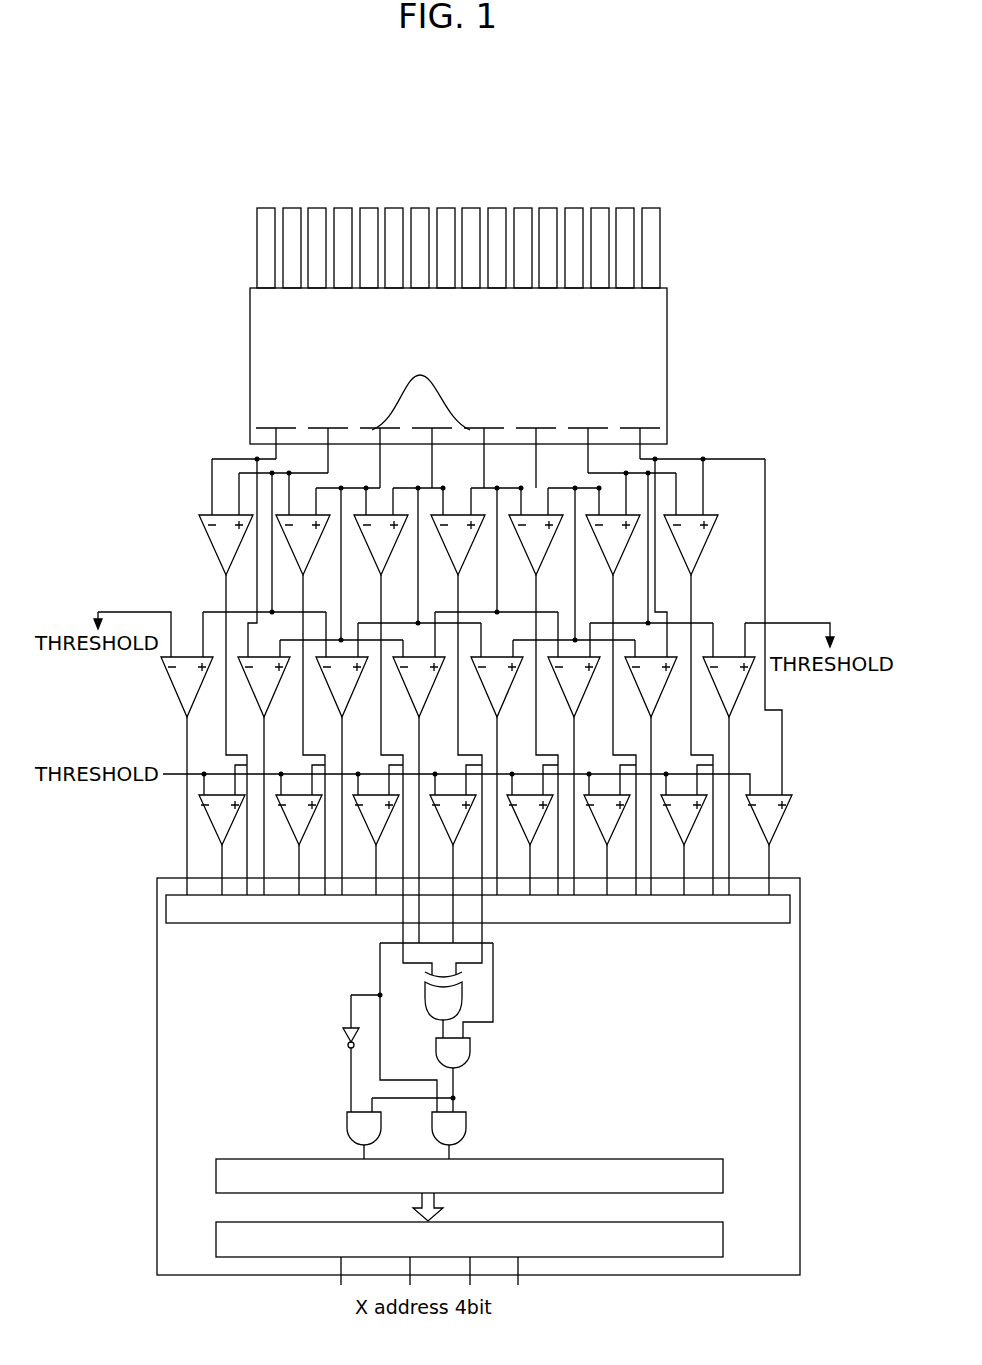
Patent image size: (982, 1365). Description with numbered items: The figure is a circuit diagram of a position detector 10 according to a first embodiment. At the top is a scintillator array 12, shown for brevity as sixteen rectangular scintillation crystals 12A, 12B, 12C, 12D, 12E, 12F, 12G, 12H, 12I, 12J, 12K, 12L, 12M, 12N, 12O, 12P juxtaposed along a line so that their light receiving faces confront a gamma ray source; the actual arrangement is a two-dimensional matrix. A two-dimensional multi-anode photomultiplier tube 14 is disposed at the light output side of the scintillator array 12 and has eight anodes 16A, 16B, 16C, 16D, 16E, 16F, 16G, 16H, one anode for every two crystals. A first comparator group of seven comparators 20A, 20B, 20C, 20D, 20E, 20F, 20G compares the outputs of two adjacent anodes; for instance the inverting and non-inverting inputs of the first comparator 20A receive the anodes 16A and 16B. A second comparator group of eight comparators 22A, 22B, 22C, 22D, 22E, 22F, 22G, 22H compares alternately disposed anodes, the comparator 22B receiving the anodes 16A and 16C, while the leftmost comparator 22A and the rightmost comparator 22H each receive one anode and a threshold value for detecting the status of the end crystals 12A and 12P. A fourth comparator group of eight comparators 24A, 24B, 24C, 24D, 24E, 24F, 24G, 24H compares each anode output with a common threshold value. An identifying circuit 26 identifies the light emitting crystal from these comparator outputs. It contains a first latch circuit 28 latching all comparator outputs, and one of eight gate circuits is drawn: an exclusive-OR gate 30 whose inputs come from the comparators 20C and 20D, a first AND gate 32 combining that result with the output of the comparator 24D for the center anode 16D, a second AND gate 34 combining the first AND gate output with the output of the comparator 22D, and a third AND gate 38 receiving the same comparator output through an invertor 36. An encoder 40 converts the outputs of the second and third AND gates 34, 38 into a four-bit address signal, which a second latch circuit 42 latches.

The position detector 10 is at (680, 434).
The scintillator array 12 is at (244, 266).
The scintillation crystal 12A is at (264, 250).
The scintillation crystal 12B is at (291, 214).
The scintillation crystal 12C is at (314, 216).
The scintillation crystal 12D is at (340, 216).
The scintillation crystal 12E is at (369, 216).
The scintillation crystal 12F is at (393, 216).
The scintillation crystal 12G is at (420, 216).
The scintillation crystal 12H is at (447, 216).
The scintillation crystal 12I is at (469, 216).
The scintillation crystal 12J is at (497, 216).
The scintillation crystal 12K is at (526, 216).
The scintillation crystal 12L is at (548, 216).
The scintillation crystal 12M is at (577, 216).
The scintillation crystal 12N is at (603, 216).
The scintillation crystal 12O is at (626, 216).
The scintillation crystal 12P is at (651, 247).
The two-dimensional multi-anode photomultiplier tube 14 is at (667, 323).
The anode 16A is at (283, 427).
The anode 16B is at (336, 427).
The anode 16C is at (370, 427).
The anode 16D is at (445, 427).
The anode 16E is at (498, 427).
The anode 16F is at (545, 427).
The anode 16G is at (600, 427).
The anode 16H is at (645, 427).
The first comparator 20A is at (216, 565).
The second comparator 20B is at (311, 562).
The comparator 20C is at (388, 562).
The comparator 20D is at (465, 562).
The comparator 20E is at (543, 562).
The comparator 20F is at (608, 562).
The comparator 20G is at (697, 562).
The leftmost comparator 22A is at (195, 703).
The comparator 22B is at (272, 703).
The comparator 22C is at (350, 703).
The comparator 22D is at (427, 703).
The comparator 22E is at (505, 703).
The comparator 22F is at (582, 703).
The comparator 22G is at (659, 703).
The rightmost comparator 22H is at (737, 703).
The comparator 24A is at (205, 822).
The comparator 24B is at (297, 830).
The comparator 24C is at (372, 830).
The comparator 24D is at (458, 835).
The comparator 24E is at (534, 835).
The comparator 24F is at (611, 835).
The comparator 24G is at (686, 835).
The comparator 24H is at (775, 833).
The identifying circuit 26 is at (157, 1024).
The first latch circuit 28 is at (200, 923).
The exclusive-OR gate 30 is at (462, 996).
The first AND gate 32 is at (470, 1052).
The second AND gate 34 is at (466, 1127).
The invertor 36 is at (343, 1035).
The third AND gate 38 is at (347, 1126).
The encoder 40 is at (216, 1180).
The second latch circuit 42 is at (216, 1245).